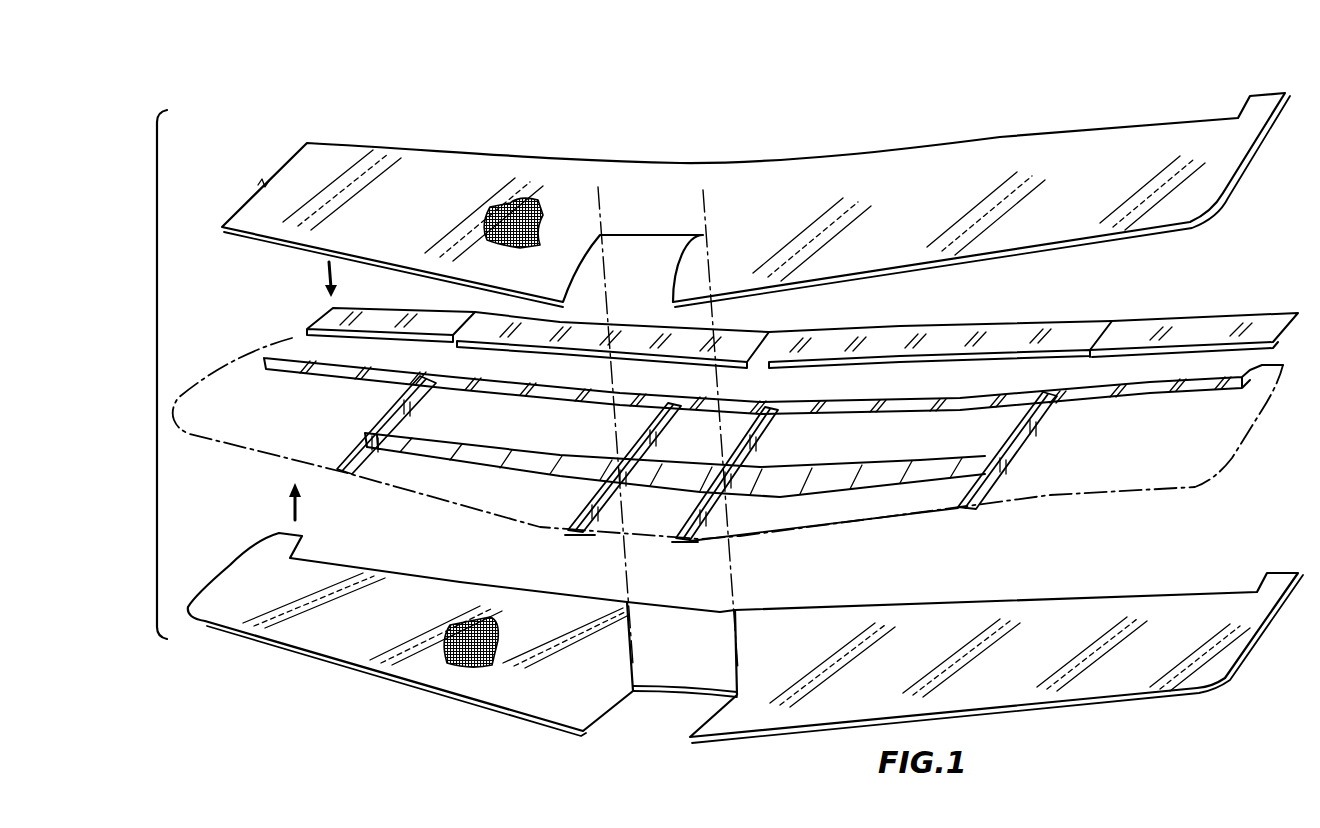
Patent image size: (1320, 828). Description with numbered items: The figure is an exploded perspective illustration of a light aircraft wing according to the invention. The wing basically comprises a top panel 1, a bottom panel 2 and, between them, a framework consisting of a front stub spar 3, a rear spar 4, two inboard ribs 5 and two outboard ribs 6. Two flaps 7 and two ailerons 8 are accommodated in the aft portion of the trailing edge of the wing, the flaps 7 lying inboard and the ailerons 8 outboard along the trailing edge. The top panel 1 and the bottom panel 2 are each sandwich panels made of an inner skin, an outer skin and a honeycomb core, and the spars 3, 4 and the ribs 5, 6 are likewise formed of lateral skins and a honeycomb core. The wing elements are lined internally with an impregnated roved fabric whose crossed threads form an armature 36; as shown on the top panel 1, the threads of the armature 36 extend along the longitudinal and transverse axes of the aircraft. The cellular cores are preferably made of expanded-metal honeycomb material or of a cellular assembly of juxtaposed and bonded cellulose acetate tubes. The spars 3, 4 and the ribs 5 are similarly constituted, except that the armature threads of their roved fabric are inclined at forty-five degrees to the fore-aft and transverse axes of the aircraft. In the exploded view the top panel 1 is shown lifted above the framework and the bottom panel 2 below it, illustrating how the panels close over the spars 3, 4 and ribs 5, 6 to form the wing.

The top panel 1 is at (895, 167).
The bottom panel 2 is at (797, 626).
The front stub spar 3 is at (480, 466).
The rear spar 4 is at (947, 402).
The inboard ribs 5 is at (632, 443).
The outboard ribs 6 is at (378, 417).
The flaps 7 is at (613, 330).
The ailerons 8 is at (407, 322).
The armature 36 is at (520, 210).